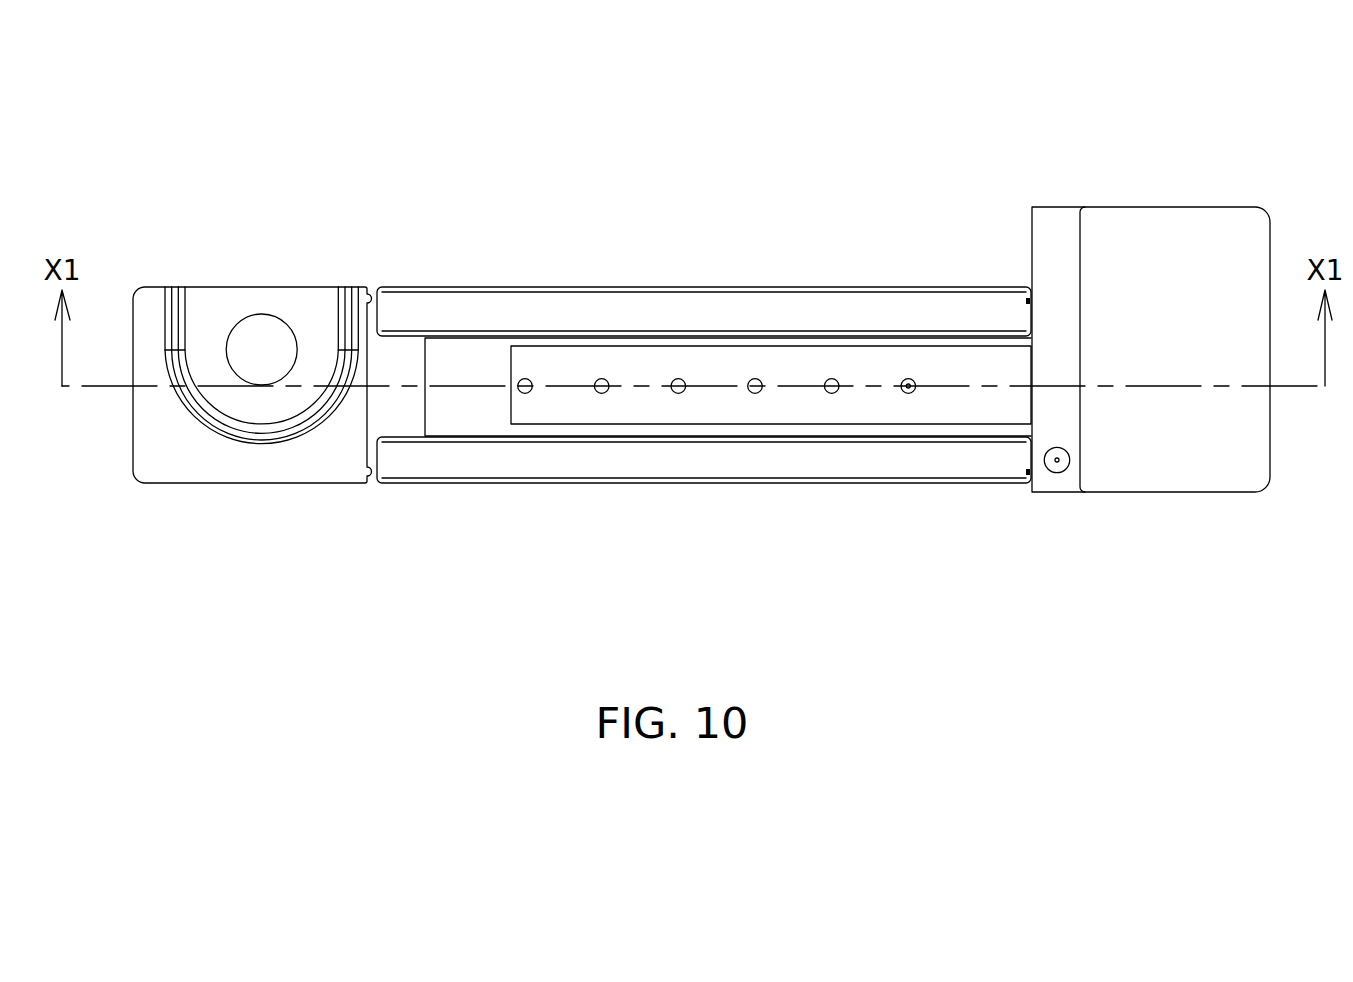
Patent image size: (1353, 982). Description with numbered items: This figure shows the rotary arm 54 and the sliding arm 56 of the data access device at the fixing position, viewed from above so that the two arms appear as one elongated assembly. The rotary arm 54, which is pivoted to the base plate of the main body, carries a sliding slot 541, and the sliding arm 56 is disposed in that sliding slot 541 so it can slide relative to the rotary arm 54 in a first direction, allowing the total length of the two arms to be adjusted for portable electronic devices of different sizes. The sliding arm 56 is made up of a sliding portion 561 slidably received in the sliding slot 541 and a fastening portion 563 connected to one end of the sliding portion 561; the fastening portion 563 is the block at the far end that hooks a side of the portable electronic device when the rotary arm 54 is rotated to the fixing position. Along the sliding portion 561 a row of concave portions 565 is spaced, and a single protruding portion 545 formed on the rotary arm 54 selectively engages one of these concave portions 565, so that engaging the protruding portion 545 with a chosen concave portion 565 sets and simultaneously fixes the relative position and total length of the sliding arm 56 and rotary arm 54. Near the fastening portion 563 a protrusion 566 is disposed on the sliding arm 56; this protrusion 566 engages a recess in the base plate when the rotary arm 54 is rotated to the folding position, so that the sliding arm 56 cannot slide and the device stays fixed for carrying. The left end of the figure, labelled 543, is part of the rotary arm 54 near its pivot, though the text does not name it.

The rotary arm 54 is at (912, 128).
The sliding slot 541 is at (570, 308).
The block with bore 543 is at (267, 340).
The protruding portion 545 is at (908, 379).
The sliding arm 56 is at (862, 567).
The sliding portion 561 is at (976, 405).
The fastening portion 563 is at (1119, 446).
The concave portion 565 is at (832, 394).
The protrusion 566 is at (1054, 472).